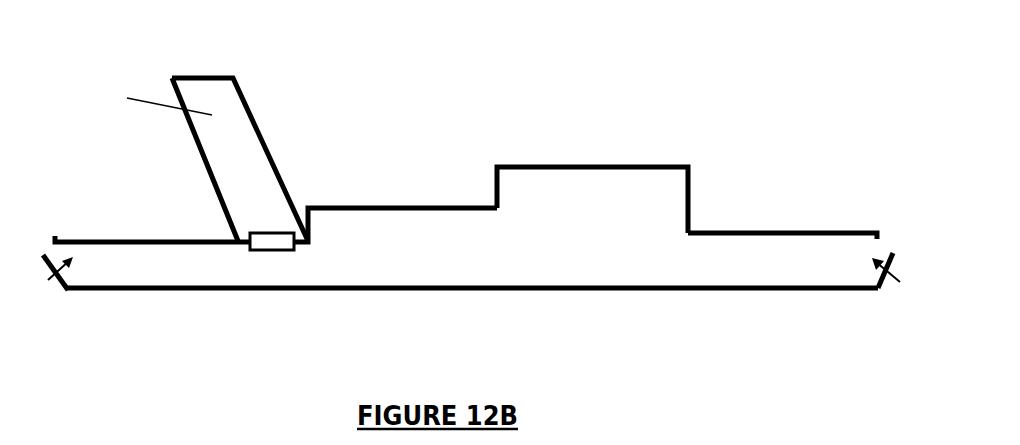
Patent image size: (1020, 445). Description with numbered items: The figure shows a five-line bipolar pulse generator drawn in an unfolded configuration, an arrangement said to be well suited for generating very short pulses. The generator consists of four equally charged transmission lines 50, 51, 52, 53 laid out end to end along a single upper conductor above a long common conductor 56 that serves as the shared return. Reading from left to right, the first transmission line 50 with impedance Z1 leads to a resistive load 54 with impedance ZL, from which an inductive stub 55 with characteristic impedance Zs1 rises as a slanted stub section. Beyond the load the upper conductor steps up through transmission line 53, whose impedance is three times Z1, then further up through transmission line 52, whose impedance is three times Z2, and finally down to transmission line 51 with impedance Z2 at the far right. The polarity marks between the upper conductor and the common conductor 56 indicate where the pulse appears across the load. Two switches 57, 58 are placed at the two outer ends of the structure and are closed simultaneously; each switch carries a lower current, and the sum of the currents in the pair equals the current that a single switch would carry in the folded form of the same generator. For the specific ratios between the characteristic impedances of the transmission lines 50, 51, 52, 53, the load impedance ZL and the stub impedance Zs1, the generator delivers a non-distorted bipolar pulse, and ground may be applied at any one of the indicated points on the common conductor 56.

The transmission line 50 is at (200, 253).
The transmission line 51 is at (785, 240).
The transmission line 52 is at (577, 203).
The transmission line 53 is at (345, 222).
The resistive load 54 is at (270, 226).
The inductive stub 55 is at (240, 135).
The common conductor 56 is at (517, 290).
The switch 57 is at (69, 228).
The switch 58 is at (864, 225).